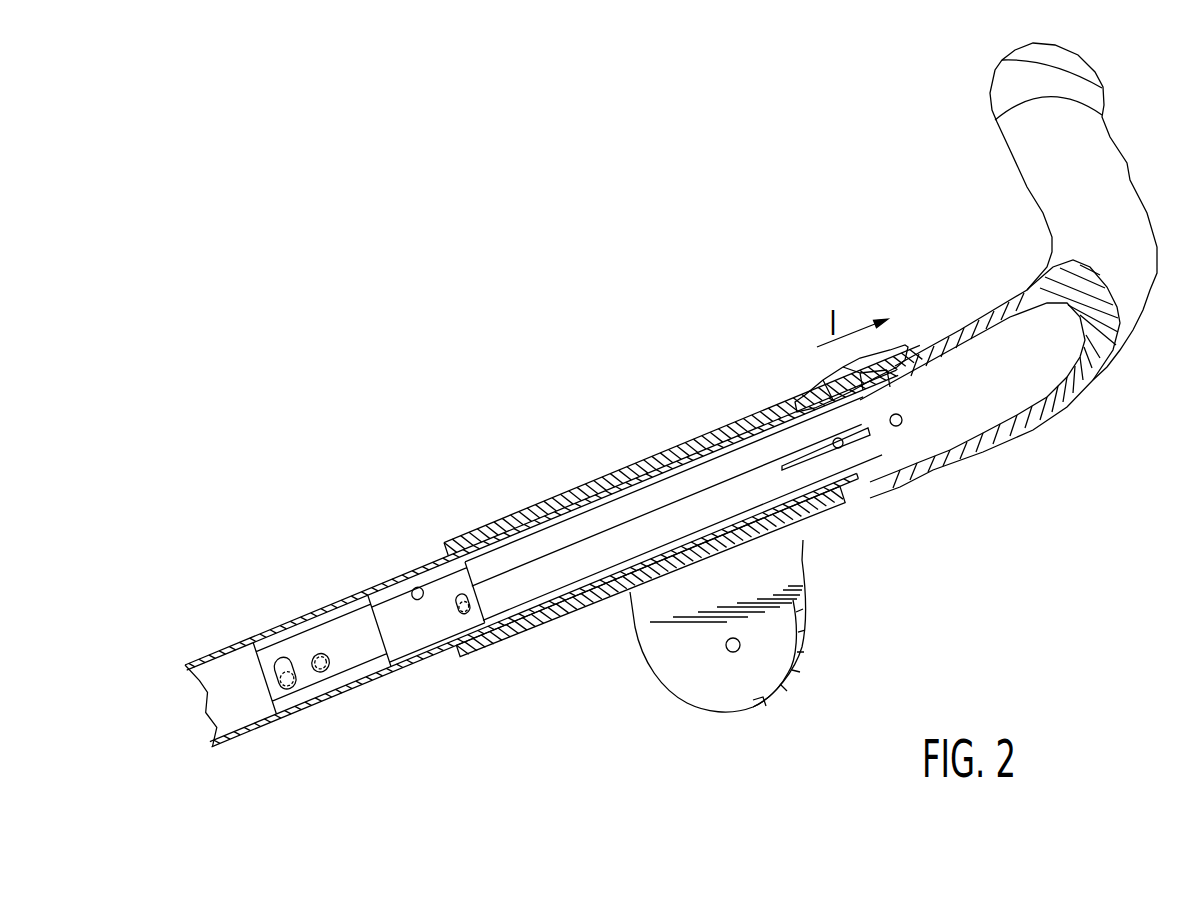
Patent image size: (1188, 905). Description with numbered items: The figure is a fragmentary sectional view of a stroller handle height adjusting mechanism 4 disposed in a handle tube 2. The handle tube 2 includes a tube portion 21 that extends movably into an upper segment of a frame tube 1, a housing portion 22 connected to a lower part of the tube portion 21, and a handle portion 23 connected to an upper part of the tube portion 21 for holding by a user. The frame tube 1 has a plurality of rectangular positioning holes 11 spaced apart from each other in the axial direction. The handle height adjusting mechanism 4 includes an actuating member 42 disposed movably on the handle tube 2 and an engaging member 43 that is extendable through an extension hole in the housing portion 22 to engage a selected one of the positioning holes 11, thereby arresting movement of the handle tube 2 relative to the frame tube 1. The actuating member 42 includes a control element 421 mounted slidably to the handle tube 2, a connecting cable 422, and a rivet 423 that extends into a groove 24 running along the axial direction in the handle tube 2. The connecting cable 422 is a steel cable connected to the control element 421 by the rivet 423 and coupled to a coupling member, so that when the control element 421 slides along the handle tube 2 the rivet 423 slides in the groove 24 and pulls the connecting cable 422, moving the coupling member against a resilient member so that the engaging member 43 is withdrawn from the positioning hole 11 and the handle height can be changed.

The frame tube 1 is at (238, 732).
The positioning holes 11 is at (308, 712).
The engaging member 43 is at (287, 712).
The housing portion 22 is at (435, 622).
The handle tube 2 is at (800, 510).
The tube portion 21 is at (810, 497).
The handle height adjusting mechanism 4 is at (716, 459).
The actuating member 42 is at (691, 459).
The control element 421 is at (807, 400).
The connecting cable 422 is at (603, 533).
The rivet 423 is at (834, 440).
The groove 24 is at (863, 430).
The handle portion 23 is at (1050, 163).